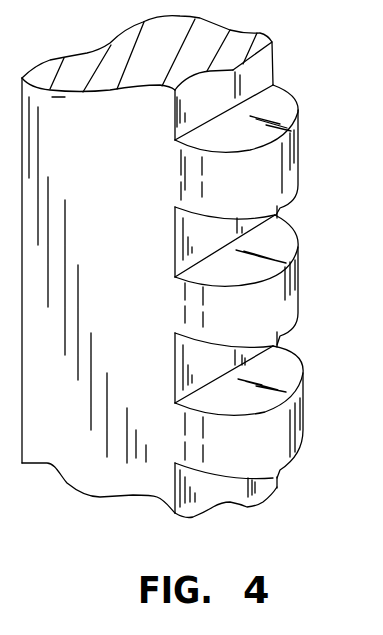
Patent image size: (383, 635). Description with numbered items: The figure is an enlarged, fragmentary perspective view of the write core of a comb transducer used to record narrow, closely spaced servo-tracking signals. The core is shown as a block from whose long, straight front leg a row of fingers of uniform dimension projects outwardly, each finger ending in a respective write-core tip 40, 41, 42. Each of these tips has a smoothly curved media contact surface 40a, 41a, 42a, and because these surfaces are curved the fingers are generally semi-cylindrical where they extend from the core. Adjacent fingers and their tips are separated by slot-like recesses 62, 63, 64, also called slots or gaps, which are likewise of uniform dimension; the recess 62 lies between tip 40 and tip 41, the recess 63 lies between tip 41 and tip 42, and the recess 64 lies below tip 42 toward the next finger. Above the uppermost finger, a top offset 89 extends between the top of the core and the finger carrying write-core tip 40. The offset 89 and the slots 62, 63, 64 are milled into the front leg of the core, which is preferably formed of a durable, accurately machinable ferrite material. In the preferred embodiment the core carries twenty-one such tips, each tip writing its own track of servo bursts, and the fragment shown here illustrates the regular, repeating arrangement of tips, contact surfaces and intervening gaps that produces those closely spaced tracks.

The top offset 89 is at (262, 70).
The write-core tip 40 is at (297, 101).
The media contact surface 40a is at (279, 162).
The slot-like recess 62 is at (275, 217).
The write-core tip 41 is at (298, 246).
The media contact surface 41a is at (279, 297).
The slot-like recess 63 is at (272, 344).
The write-core tip 42 is at (303, 372).
The media contact surface 42a is at (285, 434).
The slot-like recess 64 is at (272, 476).